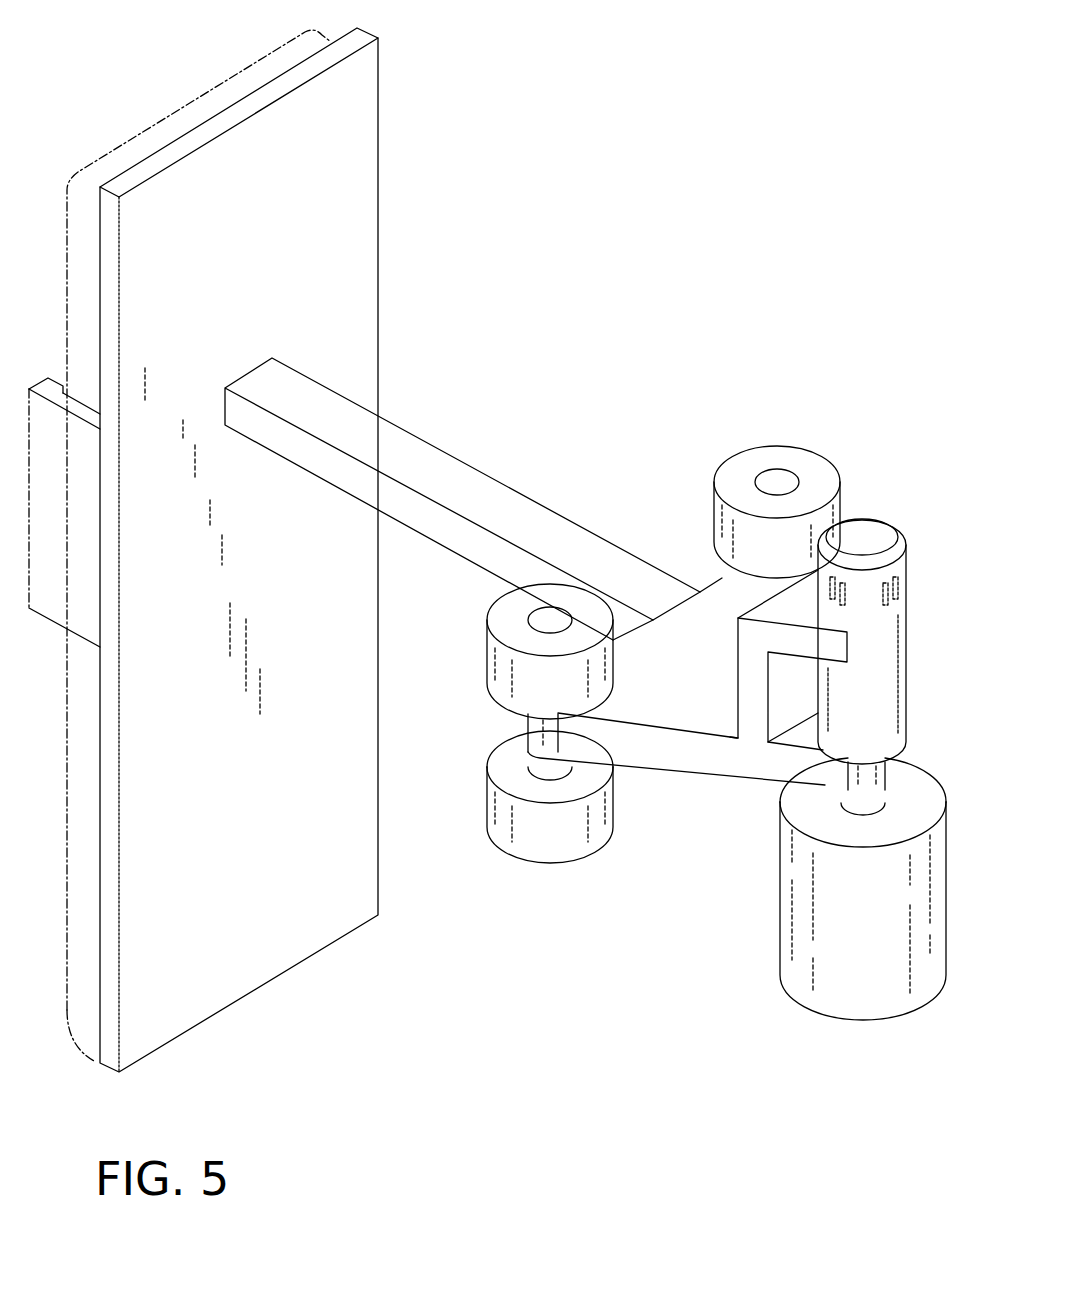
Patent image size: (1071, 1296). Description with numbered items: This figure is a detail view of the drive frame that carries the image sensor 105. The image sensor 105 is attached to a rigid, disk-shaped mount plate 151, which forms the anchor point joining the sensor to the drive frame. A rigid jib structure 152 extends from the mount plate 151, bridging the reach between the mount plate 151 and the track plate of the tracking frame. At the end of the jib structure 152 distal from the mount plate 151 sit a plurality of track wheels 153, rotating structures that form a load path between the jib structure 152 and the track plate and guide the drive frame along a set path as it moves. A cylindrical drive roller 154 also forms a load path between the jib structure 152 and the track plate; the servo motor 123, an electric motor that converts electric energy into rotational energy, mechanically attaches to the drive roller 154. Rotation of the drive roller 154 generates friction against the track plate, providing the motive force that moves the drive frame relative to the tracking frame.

The image sensor 105 is at (203, 97).
The mount plate 151 is at (342, 265).
The jib structure 152 is at (402, 453).
The track wheels 153 is at (552, 617).
The servo motor 123 is at (910, 620).
The drive roller 154 is at (875, 990).